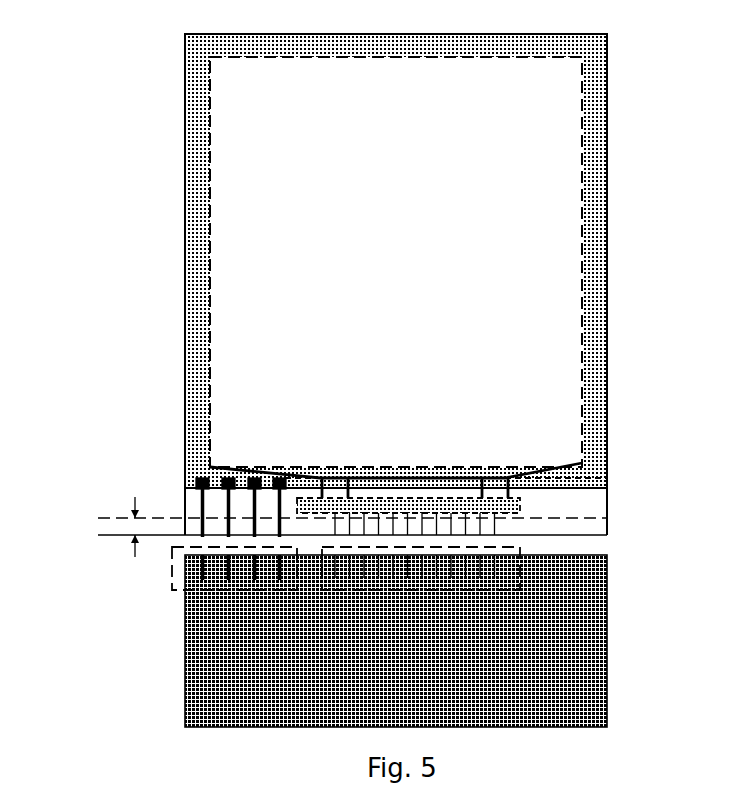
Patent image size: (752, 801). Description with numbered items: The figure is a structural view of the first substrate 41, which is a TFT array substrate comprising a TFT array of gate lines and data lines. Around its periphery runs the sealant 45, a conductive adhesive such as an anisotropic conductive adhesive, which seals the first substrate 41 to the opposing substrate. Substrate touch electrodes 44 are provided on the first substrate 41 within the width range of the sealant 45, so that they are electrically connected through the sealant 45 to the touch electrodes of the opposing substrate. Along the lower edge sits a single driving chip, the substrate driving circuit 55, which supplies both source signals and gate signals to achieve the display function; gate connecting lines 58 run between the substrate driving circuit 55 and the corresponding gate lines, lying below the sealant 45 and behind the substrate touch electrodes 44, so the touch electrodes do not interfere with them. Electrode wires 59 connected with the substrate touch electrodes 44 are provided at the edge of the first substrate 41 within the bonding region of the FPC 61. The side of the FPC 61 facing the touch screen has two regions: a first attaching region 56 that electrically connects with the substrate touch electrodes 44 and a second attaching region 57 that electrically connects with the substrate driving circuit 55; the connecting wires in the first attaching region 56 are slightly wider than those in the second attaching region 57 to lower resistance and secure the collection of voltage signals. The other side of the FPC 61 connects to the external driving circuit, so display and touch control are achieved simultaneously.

The first substrate 41 is at (607, 148).
The sealant 45 is at (595, 68).
The substrate touch electrodes 44 is at (232, 477).
The gate connecting lines 58 is at (587, 462).
The first attaching region 56 is at (183, 592).
The substrate driving circuit 55 is at (513, 510).
The electrode wires 59 is at (198, 500).
The second attaching region 57 is at (520, 578).
The FPC 61 is at (525, 690).